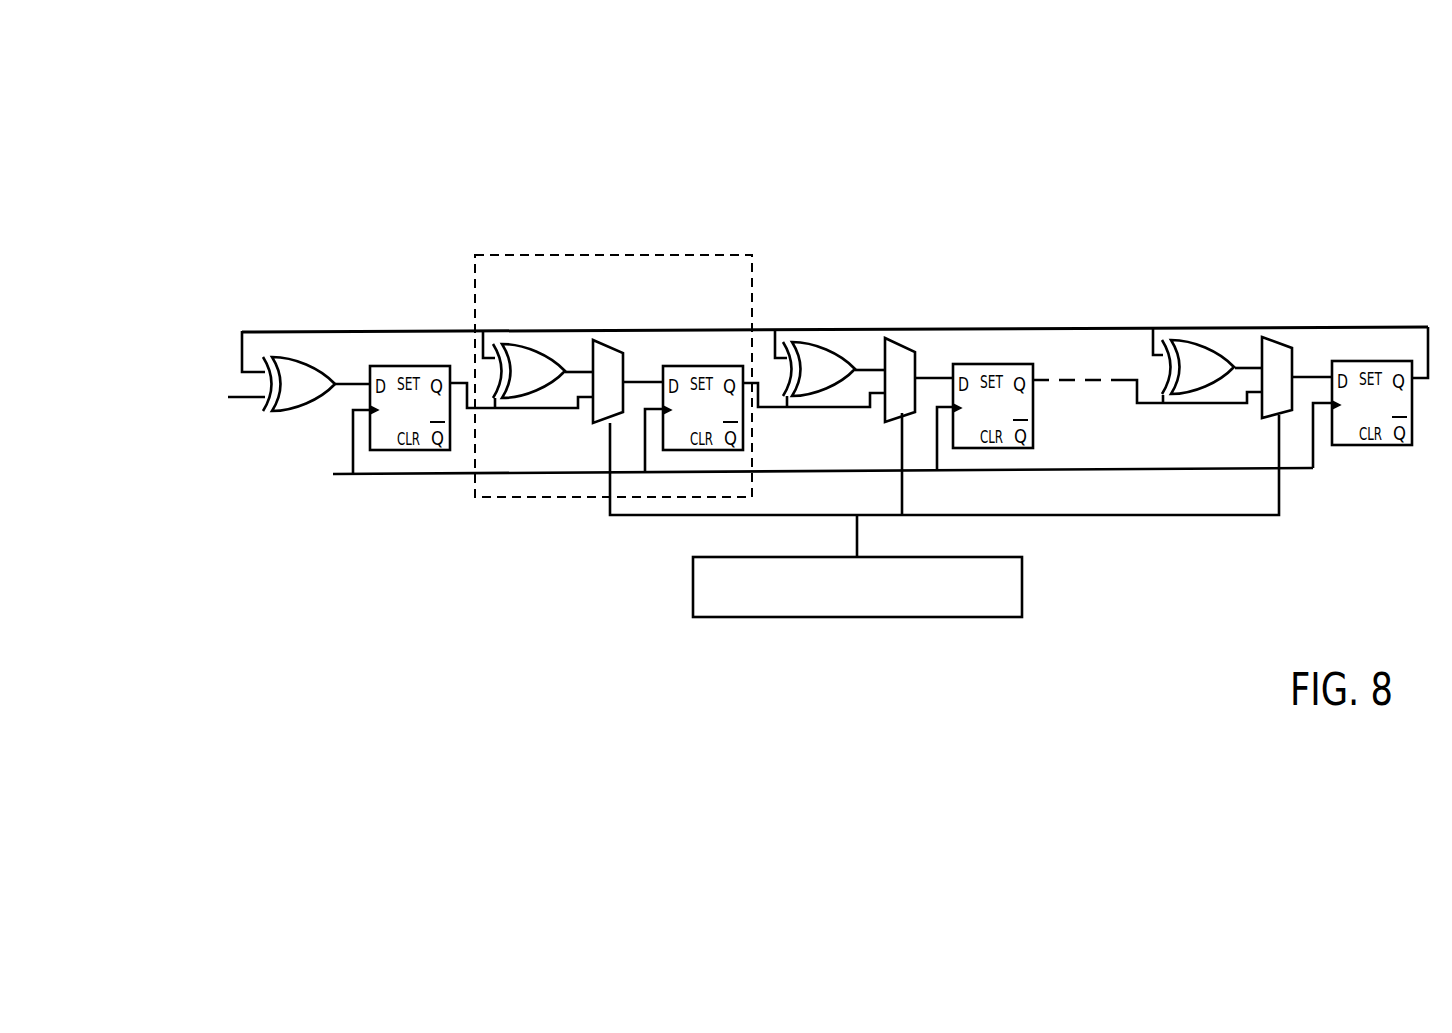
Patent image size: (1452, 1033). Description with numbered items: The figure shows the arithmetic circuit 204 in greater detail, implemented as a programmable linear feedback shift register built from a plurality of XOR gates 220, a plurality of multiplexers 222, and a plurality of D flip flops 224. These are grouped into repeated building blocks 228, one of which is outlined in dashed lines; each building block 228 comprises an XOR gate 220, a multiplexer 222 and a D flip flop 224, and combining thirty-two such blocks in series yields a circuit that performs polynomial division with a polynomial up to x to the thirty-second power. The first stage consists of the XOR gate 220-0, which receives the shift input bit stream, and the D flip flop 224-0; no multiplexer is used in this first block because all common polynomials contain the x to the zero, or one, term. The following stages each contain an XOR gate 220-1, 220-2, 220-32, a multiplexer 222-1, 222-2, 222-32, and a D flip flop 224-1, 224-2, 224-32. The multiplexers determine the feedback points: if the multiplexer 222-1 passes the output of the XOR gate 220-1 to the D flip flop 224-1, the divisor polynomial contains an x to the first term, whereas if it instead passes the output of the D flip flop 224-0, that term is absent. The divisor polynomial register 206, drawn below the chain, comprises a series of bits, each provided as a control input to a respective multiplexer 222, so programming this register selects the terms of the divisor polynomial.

The arithmetic circuit 204 is at (292, 267).
The divisor polynomial register 206 is at (1023, 582).
The XOR gate 220 is at (749, 366).
The XOR gate 220-0 is at (292, 416).
The XOR gate 220-1 is at (528, 345).
The XOR gate 220-2 is at (820, 342).
The XOR gate 220-32 is at (1198, 342).
The multiplexer 222 is at (946, 372).
The multiplexer 222-1 is at (607, 342).
The multiplexer 222-2 is at (900, 338).
The multiplexer 222-32 is at (1277, 337).
The D flip flop 224 is at (901, 399).
The D flip flop 224-0 is at (407, 451).
The D flip flop 224-1 is at (703, 451).
The D flip flop 224-2 is at (993, 449).
The D flip flop 224-32 is at (1372, 446).
The building block 228 is at (612, 253).